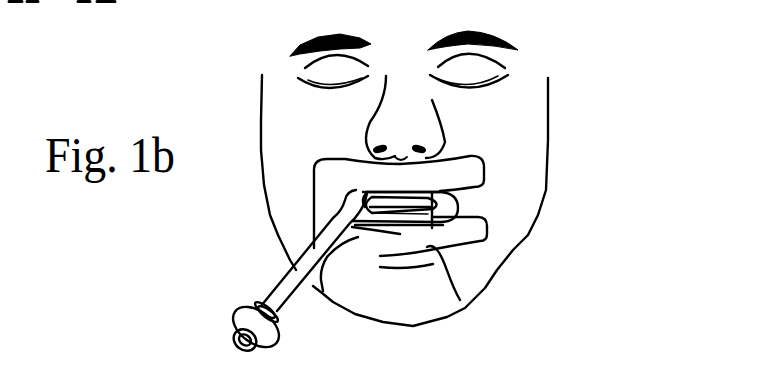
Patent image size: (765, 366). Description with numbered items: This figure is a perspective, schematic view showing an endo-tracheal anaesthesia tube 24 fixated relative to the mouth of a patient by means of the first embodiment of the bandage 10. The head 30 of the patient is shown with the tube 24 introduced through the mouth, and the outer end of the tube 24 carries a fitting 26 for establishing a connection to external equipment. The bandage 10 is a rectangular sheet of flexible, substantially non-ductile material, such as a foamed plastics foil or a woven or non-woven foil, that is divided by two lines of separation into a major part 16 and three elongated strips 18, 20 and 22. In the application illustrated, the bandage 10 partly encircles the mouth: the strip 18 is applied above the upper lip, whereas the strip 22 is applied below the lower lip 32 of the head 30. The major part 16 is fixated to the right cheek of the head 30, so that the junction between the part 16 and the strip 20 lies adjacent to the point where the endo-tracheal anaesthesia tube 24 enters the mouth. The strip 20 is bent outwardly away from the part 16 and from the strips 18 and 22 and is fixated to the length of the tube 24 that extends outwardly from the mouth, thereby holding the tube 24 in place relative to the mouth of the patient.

The bandage 10 is at (408, 215).
The major part 16 is at (327, 190).
The strip 18 is at (484, 163).
The strip 20 is at (333, 268).
The strip 22 is at (460, 300).
The endo-tracheal anaesthesia tube 24 is at (278, 300).
The fitting 26 is at (238, 327).
The head 30 is at (516, 43).
The lower lip 32 is at (487, 235).